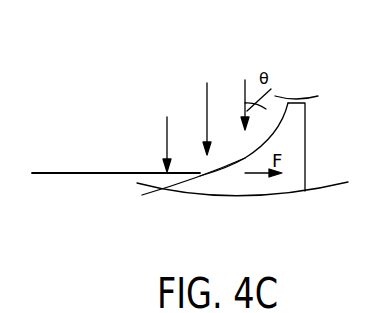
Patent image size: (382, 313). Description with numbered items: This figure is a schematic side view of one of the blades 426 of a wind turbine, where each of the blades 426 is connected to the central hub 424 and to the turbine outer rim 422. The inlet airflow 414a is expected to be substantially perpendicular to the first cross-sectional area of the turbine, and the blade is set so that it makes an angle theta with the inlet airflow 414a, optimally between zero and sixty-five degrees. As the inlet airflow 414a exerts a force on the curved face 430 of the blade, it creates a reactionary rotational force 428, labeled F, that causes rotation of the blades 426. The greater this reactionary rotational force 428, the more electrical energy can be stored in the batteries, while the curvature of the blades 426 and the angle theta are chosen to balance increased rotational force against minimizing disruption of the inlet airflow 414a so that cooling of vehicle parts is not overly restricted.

The inlet airflow 414a is at (165, 140).
The curved face 430 is at (242, 162).
The central hub 424 is at (306, 103).
The blades 426 is at (192, 183).
The reactionary rotational force 428 is at (257, 176).
The turbine outer rim 422 is at (327, 191).